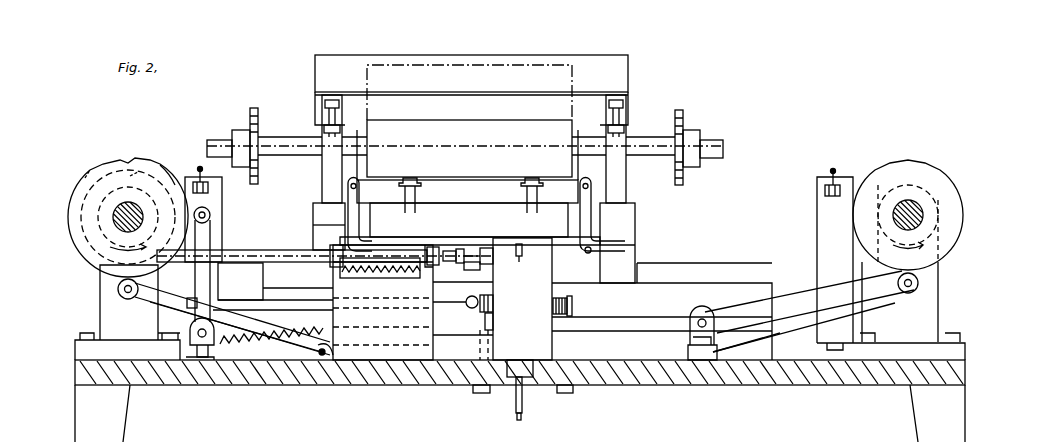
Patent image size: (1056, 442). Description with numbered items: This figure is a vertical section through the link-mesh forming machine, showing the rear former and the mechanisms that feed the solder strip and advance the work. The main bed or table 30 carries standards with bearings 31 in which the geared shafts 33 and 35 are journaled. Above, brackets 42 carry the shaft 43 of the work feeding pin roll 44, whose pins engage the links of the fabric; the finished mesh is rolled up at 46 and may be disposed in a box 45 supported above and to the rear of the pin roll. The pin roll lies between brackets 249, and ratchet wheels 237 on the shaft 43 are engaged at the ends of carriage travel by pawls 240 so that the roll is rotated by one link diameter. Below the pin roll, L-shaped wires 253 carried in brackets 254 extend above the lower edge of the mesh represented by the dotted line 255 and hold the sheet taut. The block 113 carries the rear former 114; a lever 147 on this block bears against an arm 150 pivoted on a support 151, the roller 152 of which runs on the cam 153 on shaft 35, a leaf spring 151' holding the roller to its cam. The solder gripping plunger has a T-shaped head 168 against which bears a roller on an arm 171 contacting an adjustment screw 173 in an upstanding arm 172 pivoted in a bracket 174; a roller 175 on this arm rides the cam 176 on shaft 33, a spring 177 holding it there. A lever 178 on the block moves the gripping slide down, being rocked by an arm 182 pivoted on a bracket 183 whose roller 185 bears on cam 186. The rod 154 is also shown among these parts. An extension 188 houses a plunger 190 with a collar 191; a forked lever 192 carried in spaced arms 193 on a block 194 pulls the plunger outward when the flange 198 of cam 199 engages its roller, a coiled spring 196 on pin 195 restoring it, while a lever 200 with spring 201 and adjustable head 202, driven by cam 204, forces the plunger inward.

The main bed or table 30 is at (966, 372).
The bearings 31 is at (937, 318).
The shaft 33 is at (113, 220).
The shaft 35 is at (918, 210).
The brackets 42 is at (333, 178).
The shaft 43 is at (275, 138).
The work feeding pin roll 44 is at (469, 138).
The box 45 is at (629, 64).
The roll of finished mesh 46 is at (553, 66).
The block 113 is at (492, 329).
The rear former 114 is at (521, 257).
The lever 147 is at (572, 305).
The arm 150 is at (452, 192).
The support 151 is at (567, 283).
The leaf spring 151' is at (752, 373).
The roller 152 is at (408, 178).
The cam 153 is at (960, 232).
The rod 154 is at (304, 352).
The T-shaped head 168 is at (493, 303).
The arm 171 is at (242, 300).
The upstanding arm 172 is at (206, 272).
The adjustment screw 173 is at (172, 336).
The bracket 174 is at (196, 350).
The roller 175 is at (214, 217).
The cam 176 is at (167, 170).
The spring 177 is at (222, 345).
The lever 178 is at (486, 323).
The arm 182 is at (449, 335).
The bracket 183 is at (325, 363).
The roller 185 is at (117, 287).
The cam 186 is at (150, 299).
The extension 188 is at (490, 248).
The plunger 190 is at (479, 246).
The collar 191 is at (462, 246).
The lever 192 is at (262, 255).
The spaced arms 193 is at (338, 268).
The block 194 is at (384, 352).
The pin 195 is at (476, 274).
The coiled spring 196 is at (386, 272).
The flange 198 is at (92, 178).
The cam 199 is at (136, 178).
The lever 200 is at (253, 248).
The spring 201 is at (337, 243).
The head 202 is at (462, 248).
The cam 204 is at (90, 246).
The ratchet wheels 237 is at (253, 108).
The pawls 240 is at (208, 189).
The brackets 249 is at (365, 145).
The wires 253 is at (360, 214).
The brackets 254 is at (350, 193).
The lower edge of the mesh 255 is at (612, 250).